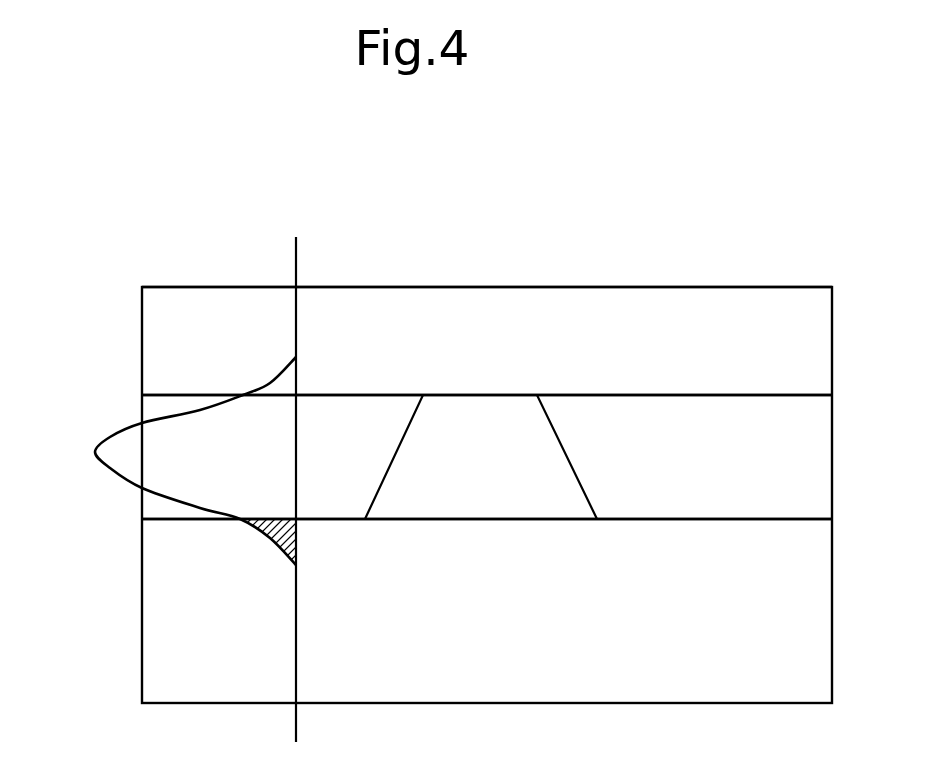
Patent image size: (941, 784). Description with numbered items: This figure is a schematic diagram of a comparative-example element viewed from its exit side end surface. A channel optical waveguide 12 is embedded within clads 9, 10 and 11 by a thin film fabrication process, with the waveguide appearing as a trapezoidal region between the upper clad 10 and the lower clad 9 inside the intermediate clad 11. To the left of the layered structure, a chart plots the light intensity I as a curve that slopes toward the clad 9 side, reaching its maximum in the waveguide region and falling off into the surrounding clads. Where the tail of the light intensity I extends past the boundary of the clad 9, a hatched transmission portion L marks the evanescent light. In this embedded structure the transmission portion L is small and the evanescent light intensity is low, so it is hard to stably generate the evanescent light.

The clad 9 is at (818, 629).
The clad 10 is at (818, 349).
The clad 11 is at (818, 460).
The channel optical waveguide 12 is at (478, 413).
The light intensity I is at (115, 435).
The transmission portion L is at (277, 532).